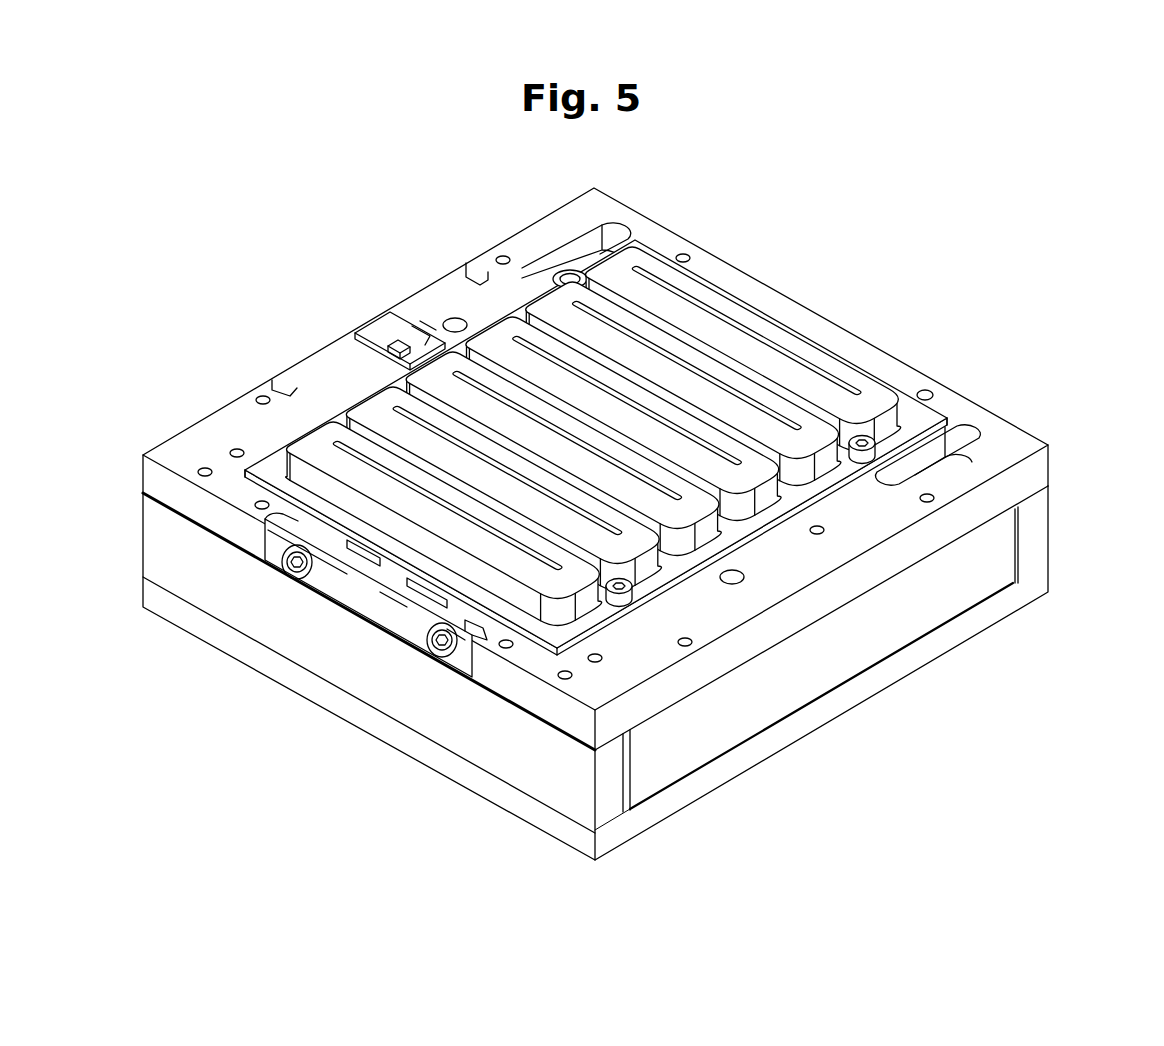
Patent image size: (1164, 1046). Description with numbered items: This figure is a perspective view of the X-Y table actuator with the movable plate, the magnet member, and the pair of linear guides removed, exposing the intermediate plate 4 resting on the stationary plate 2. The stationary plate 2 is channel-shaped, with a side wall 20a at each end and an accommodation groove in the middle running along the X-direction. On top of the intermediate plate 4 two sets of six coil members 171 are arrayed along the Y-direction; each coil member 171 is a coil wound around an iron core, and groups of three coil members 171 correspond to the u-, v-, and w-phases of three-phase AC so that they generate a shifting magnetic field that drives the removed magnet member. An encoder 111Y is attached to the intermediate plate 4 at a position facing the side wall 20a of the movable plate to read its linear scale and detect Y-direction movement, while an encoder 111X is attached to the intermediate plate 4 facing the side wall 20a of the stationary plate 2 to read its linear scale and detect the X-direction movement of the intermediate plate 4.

The stationary plate 2 is at (867, 688).
The intermediate plate 4 is at (994, 423).
The side wall 20a is at (447, 727).
The coil member 171 is at (683, 350).
The encoder 111X is at (360, 617).
The encoder 111Y is at (378, 332).